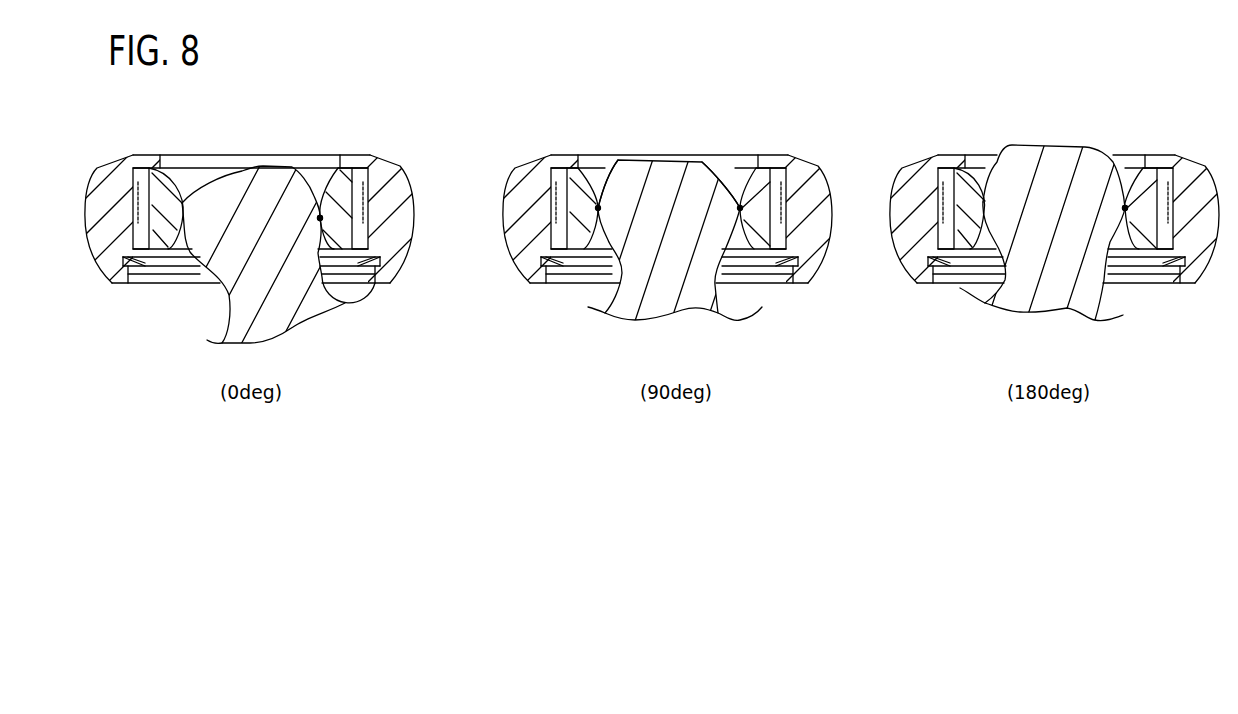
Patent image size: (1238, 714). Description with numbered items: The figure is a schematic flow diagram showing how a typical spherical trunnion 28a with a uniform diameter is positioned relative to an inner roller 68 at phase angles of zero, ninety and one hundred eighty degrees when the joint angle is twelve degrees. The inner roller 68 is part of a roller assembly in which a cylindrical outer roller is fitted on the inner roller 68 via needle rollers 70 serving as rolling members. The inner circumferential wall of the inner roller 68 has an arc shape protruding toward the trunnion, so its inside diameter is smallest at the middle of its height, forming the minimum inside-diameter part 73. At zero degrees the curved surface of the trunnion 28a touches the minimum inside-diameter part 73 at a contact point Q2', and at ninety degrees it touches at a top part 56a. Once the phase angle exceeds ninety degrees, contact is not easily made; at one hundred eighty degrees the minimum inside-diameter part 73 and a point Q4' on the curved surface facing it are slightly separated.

The spherical trunnion 28a is at (272, 180).
The inner roller 68 is at (158, 174).
The needle rollers 70 is at (142, 240).
The minimum inside-diameter part 73 is at (320, 216).
The top part 56a is at (616, 198).
The contact point Q2' is at (296, 233).
The point on the curved surface of the trunnion Q4' is at (1131, 164).